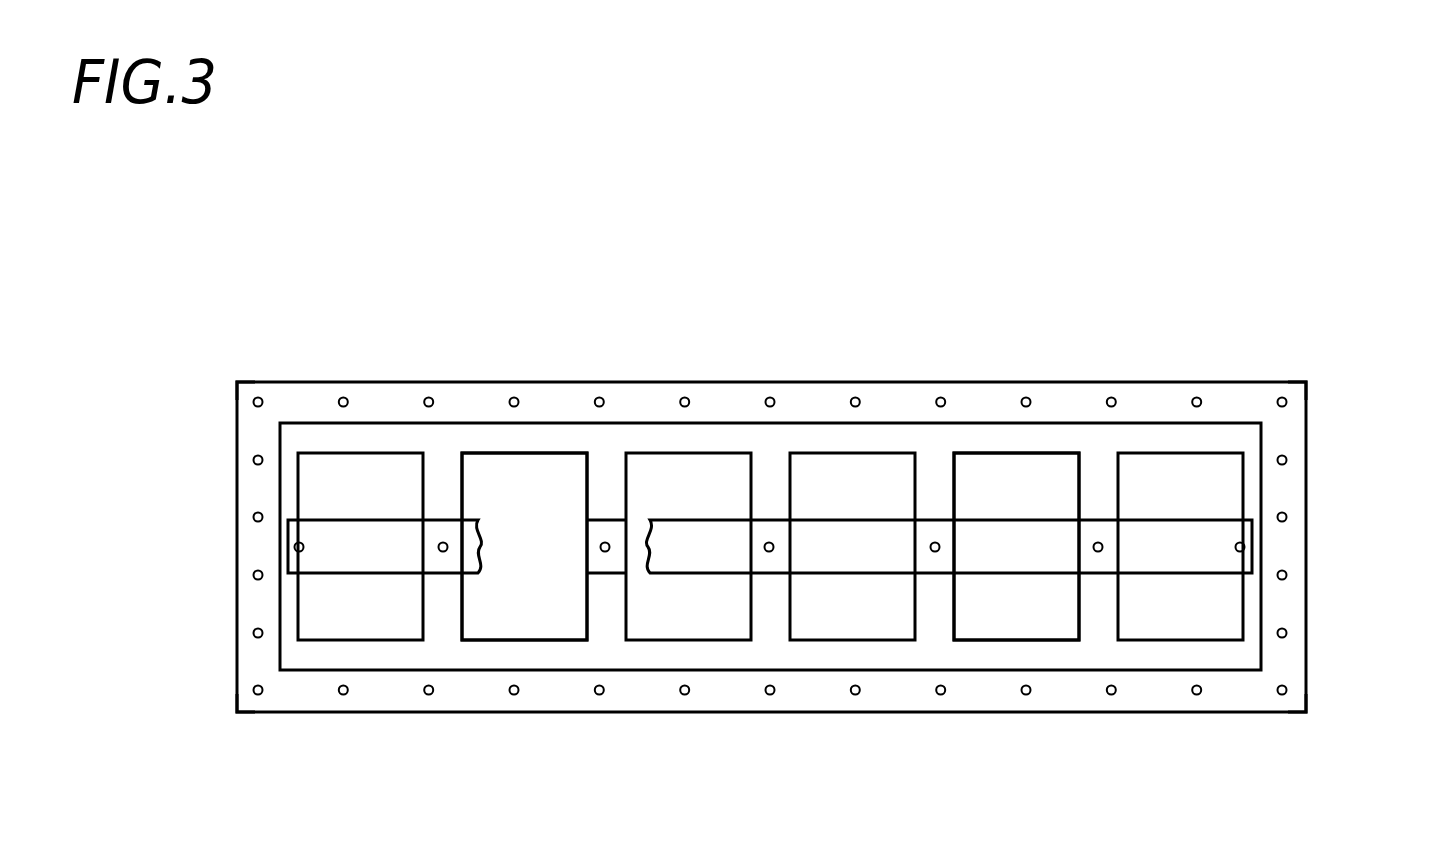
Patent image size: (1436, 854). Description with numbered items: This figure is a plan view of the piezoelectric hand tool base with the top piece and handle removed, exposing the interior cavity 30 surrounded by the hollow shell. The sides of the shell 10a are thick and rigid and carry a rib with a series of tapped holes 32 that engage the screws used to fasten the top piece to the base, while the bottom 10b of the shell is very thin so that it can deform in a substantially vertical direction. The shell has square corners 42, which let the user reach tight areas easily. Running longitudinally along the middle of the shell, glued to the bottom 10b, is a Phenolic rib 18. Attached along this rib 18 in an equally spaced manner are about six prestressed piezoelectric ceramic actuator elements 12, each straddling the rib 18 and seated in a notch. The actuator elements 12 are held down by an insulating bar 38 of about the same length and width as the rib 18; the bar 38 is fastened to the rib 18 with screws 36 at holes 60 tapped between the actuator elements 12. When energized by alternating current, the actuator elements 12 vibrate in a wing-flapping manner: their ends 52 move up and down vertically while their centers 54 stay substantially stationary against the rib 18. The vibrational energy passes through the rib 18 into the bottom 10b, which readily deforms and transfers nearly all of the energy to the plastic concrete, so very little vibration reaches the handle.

The sides of the shell 10a is at (815, 390).
The bottom of the shell 10b is at (658, 652).
The actuator elements 12 is at (340, 628).
The rib 18 is at (598, 563).
The interior cavity 30 is at (1110, 662).
The tapped holes 32 is at (1112, 397).
The screws 36 is at (443, 542).
The bar 38 is at (685, 545).
The square corners 42 is at (237, 382).
The ends of the actuator elements 52 is at (330, 453).
The centers of the actuator elements 54 is at (533, 520).
The holes 60 is at (605, 541).